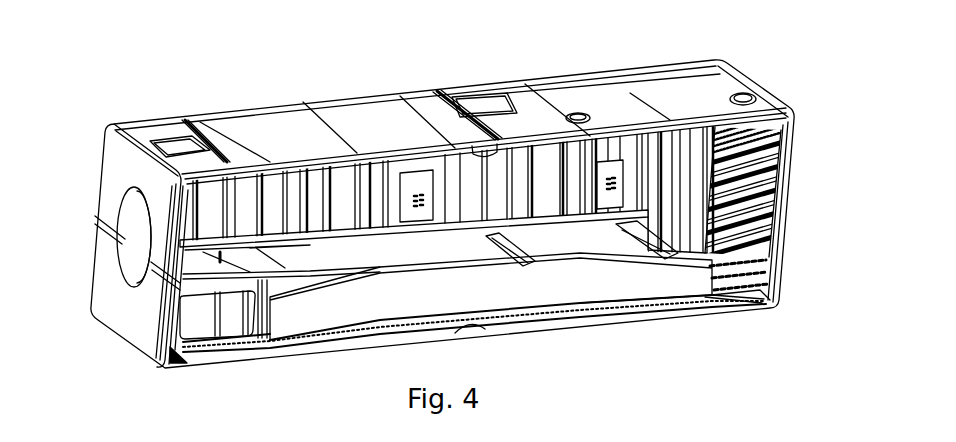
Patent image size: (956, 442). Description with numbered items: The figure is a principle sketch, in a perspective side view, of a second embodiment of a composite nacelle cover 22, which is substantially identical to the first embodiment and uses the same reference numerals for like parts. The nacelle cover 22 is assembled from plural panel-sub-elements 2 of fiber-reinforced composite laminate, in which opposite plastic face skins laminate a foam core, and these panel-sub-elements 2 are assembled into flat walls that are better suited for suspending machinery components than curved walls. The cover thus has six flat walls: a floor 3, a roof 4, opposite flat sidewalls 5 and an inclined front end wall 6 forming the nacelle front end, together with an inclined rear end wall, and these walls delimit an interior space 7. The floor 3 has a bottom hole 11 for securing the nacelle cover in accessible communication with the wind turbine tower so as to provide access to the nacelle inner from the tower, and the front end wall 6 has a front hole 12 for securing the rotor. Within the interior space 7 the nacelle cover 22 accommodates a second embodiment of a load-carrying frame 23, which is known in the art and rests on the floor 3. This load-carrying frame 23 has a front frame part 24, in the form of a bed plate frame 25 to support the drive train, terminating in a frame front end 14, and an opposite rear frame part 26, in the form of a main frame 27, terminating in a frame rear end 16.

The nacelle cover 22 is at (130, 98).
The panel-sub-elements 2 is at (385, 110).
The roof 4 is at (290, 132).
The sidewalls 5 is at (124, 202).
The front hole 12 is at (97, 222).
The front end wall 6 is at (106, 266).
The interior space 7 is at (790, 186).
The frame front end 14 is at (170, 298).
The bed plate frame 25 is at (172, 348).
The bottom hole 11 is at (195, 330).
The front frame part 24 is at (231, 340).
The floor 3 is at (282, 357).
The load-carrying frame 23 is at (543, 300).
The rear frame part 26 is at (602, 285).
The main frame 27 is at (655, 288).
The frame rear end 16 is at (727, 300).